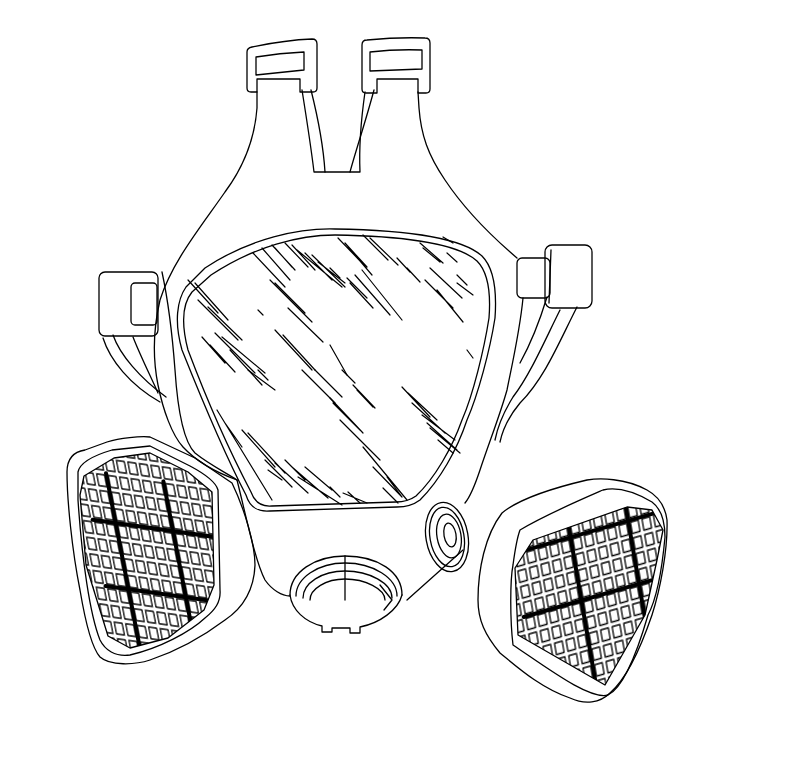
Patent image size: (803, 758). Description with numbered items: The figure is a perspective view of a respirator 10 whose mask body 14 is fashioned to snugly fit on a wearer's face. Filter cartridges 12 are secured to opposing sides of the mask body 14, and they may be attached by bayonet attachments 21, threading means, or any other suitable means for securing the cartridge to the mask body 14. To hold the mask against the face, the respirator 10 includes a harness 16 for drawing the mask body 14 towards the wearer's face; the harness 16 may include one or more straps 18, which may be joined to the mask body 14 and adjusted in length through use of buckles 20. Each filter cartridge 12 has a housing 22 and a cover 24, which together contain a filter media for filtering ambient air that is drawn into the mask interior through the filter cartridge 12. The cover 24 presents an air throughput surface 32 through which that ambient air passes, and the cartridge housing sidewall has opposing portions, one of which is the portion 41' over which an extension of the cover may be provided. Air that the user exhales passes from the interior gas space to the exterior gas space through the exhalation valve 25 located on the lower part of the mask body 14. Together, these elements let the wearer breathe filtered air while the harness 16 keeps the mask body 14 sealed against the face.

The respirator 10 is at (503, 122).
The filter cartridges 12 is at (106, 432).
The mask body 14 is at (440, 202).
The harness 16 is at (225, 114).
The straps 18 is at (358, 120).
The buckles 20 is at (420, 52).
The bayonet attachments 21 is at (449, 545).
The housing 22 is at (605, 488).
The cover 24 is at (648, 500).
The exhalation valve 25 is at (325, 620).
The air throughput surface 32 is at (640, 580).
The opposing portion of the housing sidewall 41' is at (572, 573).